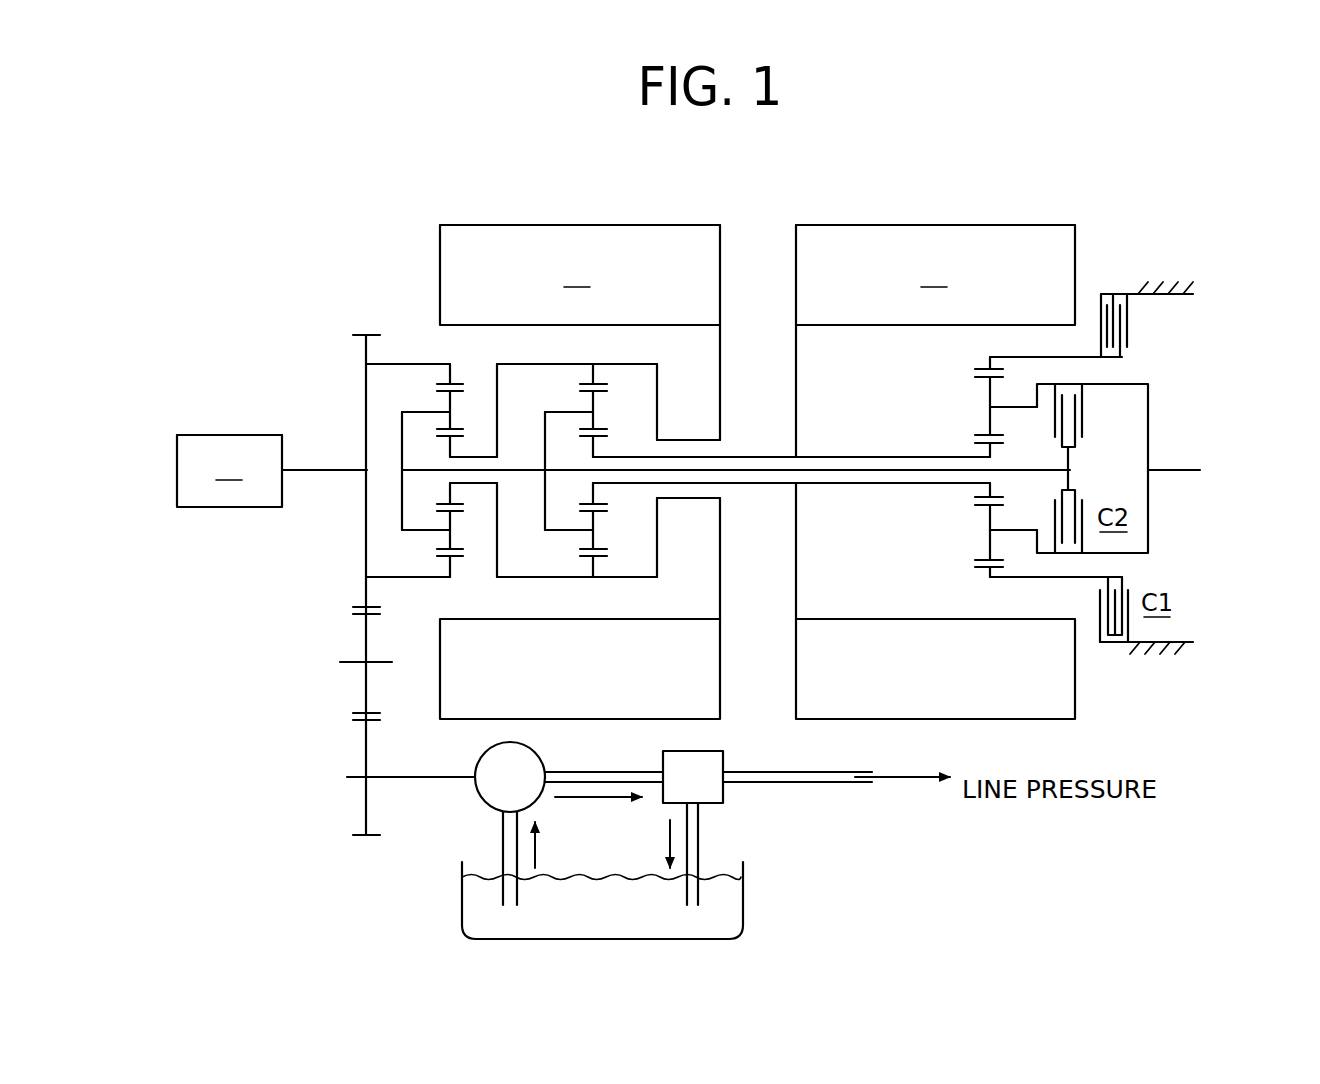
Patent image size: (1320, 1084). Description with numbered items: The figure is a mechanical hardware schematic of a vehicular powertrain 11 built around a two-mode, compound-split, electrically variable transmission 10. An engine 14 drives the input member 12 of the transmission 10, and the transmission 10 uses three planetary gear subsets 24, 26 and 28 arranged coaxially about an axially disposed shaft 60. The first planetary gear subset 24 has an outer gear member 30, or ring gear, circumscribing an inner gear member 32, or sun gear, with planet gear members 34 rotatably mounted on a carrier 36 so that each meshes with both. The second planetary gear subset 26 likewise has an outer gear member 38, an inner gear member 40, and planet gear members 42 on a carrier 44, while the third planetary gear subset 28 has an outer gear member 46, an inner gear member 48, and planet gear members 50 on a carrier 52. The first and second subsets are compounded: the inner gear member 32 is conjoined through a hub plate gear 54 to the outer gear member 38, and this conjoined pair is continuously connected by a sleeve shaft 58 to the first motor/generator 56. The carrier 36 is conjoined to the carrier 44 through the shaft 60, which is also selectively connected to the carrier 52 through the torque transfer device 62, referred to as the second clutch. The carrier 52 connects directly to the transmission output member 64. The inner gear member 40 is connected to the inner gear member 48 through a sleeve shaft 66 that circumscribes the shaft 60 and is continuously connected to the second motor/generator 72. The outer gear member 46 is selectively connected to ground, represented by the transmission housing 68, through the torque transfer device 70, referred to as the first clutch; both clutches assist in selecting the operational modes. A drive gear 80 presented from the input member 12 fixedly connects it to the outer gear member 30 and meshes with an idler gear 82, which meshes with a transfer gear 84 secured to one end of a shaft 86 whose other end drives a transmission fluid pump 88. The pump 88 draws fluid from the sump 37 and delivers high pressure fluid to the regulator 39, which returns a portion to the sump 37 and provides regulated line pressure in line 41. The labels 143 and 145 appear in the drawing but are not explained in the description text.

The electrically variable transmission 10 is at (753, 212).
The vehicular powertrain 11 is at (300, 343).
The input member 12 is at (326, 468).
The engine 14 is at (229, 471).
The first planetary gear subset 24 is at (417, 357).
The second planetary gear subset 26 is at (616, 385).
The third planetary gear subset 28 is at (946, 396).
The outer gear member 30 is at (453, 383).
The inner gear member 32 is at (460, 445).
The planet gear members 34 is at (440, 402).
The carrier 36 is at (402, 503).
The sump 37 is at (744, 903).
The outer gear member 38 is at (585, 385).
The regulator 39 is at (727, 799).
The inner gear member 40 is at (588, 500).
The line 41 is at (860, 783).
The planet gear members 42 is at (595, 423).
The carrier 44 is at (545, 512).
The outer gear member 46 is at (985, 368).
The inner gear member 48 is at (1002, 491).
The planet gear members 50 is at (985, 412).
The carrier 52 is at (1125, 384).
The hub plate gear 54 is at (500, 400).
The first motor/generator 56 is at (580, 275).
The sleeve shaft 58 is at (693, 440).
The shaft 60 is at (750, 468).
The torque transfer device 62 is at (1085, 410).
The transmission output member 64 is at (1173, 467).
The sleeve shaft 66 is at (820, 457).
The transmission housing 68 is at (1178, 283).
The torque transfer device 70 is at (1130, 316).
The second motor/generator 72 is at (935, 275).
The drive gear 80 is at (366, 538).
The idler gear 82 is at (364, 683).
The transfer gear 84 is at (366, 743).
The shaft 86 is at (408, 780).
The transmission fluid pump 88 is at (525, 767).
The transmission housing 143 is at (467, 225).
The controller 145 is at (237, 433).